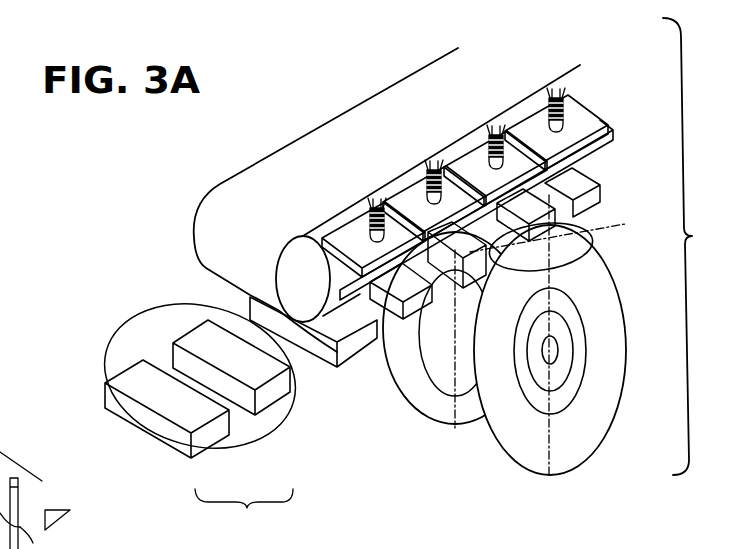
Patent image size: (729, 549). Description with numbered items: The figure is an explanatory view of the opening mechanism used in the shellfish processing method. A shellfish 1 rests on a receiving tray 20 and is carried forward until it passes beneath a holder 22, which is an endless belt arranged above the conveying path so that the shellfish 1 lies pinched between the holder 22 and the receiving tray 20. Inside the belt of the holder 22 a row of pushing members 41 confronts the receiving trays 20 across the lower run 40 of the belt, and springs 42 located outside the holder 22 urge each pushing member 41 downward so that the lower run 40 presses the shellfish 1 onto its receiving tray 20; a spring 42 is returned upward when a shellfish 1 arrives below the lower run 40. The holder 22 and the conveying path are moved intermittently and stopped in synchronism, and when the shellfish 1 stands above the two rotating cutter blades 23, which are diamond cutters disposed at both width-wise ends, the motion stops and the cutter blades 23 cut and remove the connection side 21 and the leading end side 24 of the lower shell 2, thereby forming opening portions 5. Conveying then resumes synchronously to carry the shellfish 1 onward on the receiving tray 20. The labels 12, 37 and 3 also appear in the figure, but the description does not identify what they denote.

The shellfish 1 is at (168, 278).
The rotary unit 12 is at (691, 246).
The receiving tray 20 is at (244, 512).
The connection side 21 is at (130, 322).
The holder 22 is at (362, 118).
The cutter blade 23 is at (613, 368).
The leading end side 24 is at (590, 266).
The permanent magnet block 37 is at (216, 430).
The lower run 40 is at (590, 153).
The pushing member 41 is at (345, 226).
The spring 42 is at (377, 198).
The lower shell 2 is at (0, 458).
The opening portion 5 is at (20, 487).
The base 3 is at (33, 538).